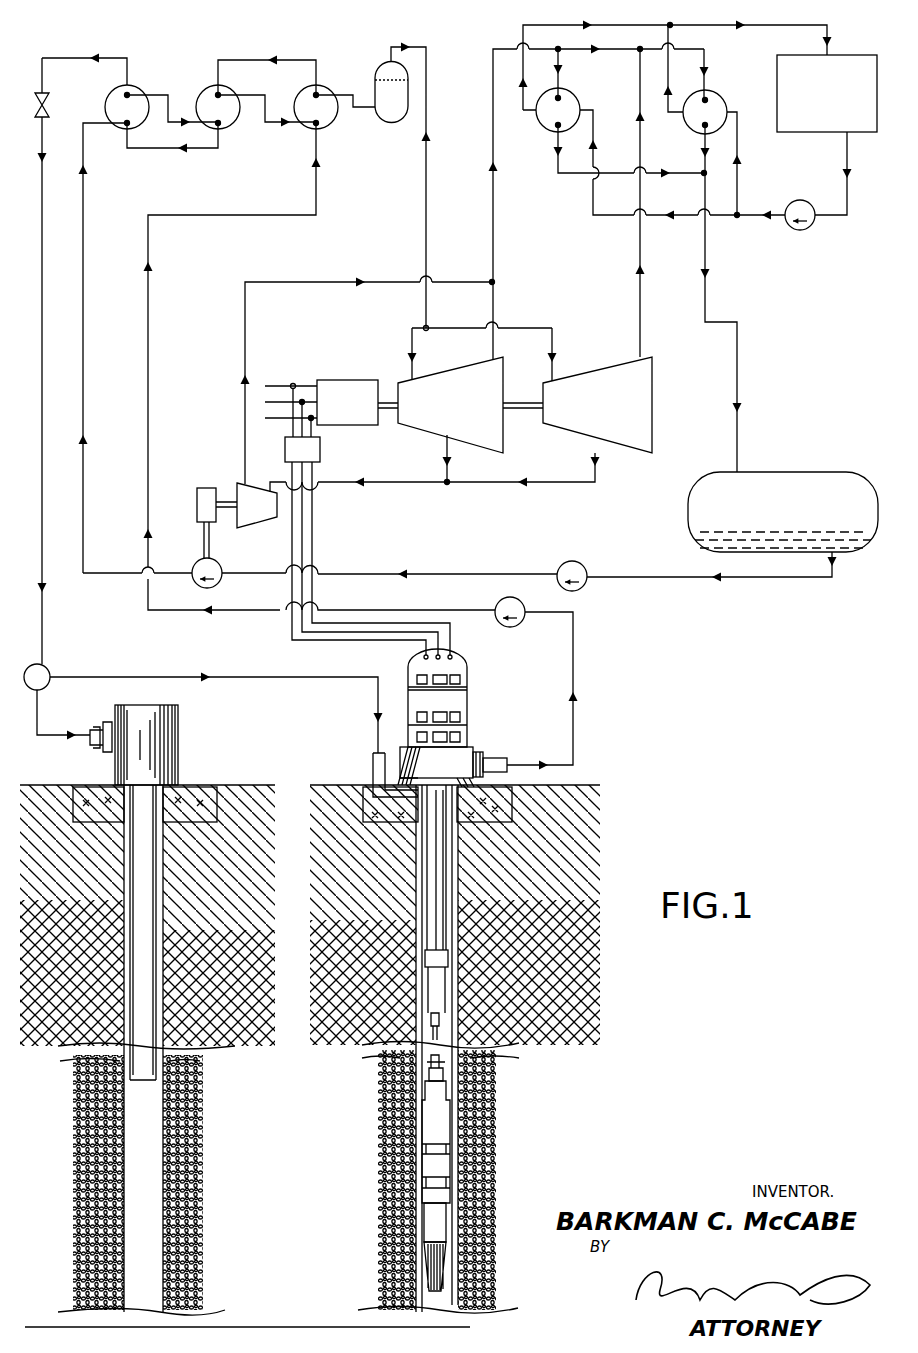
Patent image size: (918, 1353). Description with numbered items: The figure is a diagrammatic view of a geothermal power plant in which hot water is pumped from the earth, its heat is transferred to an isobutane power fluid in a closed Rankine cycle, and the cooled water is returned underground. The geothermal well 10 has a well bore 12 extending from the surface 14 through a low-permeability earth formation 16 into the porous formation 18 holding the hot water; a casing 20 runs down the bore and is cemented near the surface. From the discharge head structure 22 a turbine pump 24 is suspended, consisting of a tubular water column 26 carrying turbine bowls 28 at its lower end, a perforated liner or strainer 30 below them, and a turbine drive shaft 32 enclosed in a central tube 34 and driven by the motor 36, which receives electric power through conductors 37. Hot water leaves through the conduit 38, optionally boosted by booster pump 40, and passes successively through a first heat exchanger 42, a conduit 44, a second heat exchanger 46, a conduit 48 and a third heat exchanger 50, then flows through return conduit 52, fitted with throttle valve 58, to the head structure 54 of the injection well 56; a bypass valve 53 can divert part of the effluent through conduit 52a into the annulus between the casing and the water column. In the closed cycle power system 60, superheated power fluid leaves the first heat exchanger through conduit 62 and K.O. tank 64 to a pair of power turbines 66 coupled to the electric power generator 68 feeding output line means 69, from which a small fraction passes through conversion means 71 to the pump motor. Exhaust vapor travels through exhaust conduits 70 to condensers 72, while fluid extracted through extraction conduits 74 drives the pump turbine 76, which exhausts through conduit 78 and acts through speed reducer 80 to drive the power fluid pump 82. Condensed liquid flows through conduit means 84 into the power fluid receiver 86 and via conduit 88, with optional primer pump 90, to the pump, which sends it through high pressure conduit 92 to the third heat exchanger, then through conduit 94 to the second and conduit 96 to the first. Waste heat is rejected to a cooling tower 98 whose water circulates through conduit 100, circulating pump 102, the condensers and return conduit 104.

The geothermal well 10 is at (392, 778).
The well bore 12 is at (420, 868).
The surface of the ground 14 is at (340, 785).
The earth formation of low permeability 16 is at (378, 920).
The porous formation 18 is at (82, 1165).
The casing 20 is at (462, 905).
The discharge head structure 22 is at (458, 758).
The turbine pump 24 is at (455, 1132).
The tubular water column 26 is at (440, 945).
The turbine bowls 28 is at (440, 1165).
The perforated liner or strainer 30 is at (430, 1272).
The turbine drive shaft 32 is at (410, 1058).
The tube 34 is at (430, 1072).
The motor 36 is at (465, 697).
The conductors 37 is at (348, 642).
The conduit 38 is at (150, 358).
The booster pump 40 is at (506, 627).
The first heat exchanger 42 is at (332, 126).
The conduit 44 is at (240, 60).
The second heat exchanger 46 is at (228, 126).
The conduit 48 is at (158, 150).
The third heat exchanger 50 is at (140, 95).
The return conduit 52 is at (76, 58).
The conduit 52a is at (170, 677).
The bypass valve 53 is at (48, 688).
The head structure 54 is at (165, 705).
The injection well 56 is at (182, 782).
The throttle valve 58 is at (52, 100).
The closed cycle power system 60 is at (765, 584).
The conduit 62 is at (345, 94).
The K.O. tank 64 is at (400, 122).
The power turbines 66 is at (440, 374).
The electric power generator 68 is at (347, 380).
The output line means 69 is at (286, 382).
The exhaust conduits 70 is at (493, 226).
The transformer or other conversion means 71 is at (321, 452).
The condensers 72 is at (576, 100).
The extraction conduits 74 is at (445, 452).
The power fluid pump turbine 76 is at (258, 528).
The exhaust conduit 78 is at (248, 340).
The speed reducer 80 is at (206, 488).
The power fluid pump 82 is at (198, 562).
The conduit means 84 is at (708, 247).
The power fluid receiver 86 is at (804, 472).
The conduit 88 is at (504, 574).
The booster or primer pump 90 is at (584, 566).
The high pressure power fluid conduit 92 is at (88, 350).
The conduit 94 is at (172, 108).
The conduit 96 is at (268, 106).
The cooling tower 98 is at (858, 56).
The conduit 100 is at (852, 215).
The circulating pump 102 is at (812, 228).
The return conduit 104 is at (755, 28).